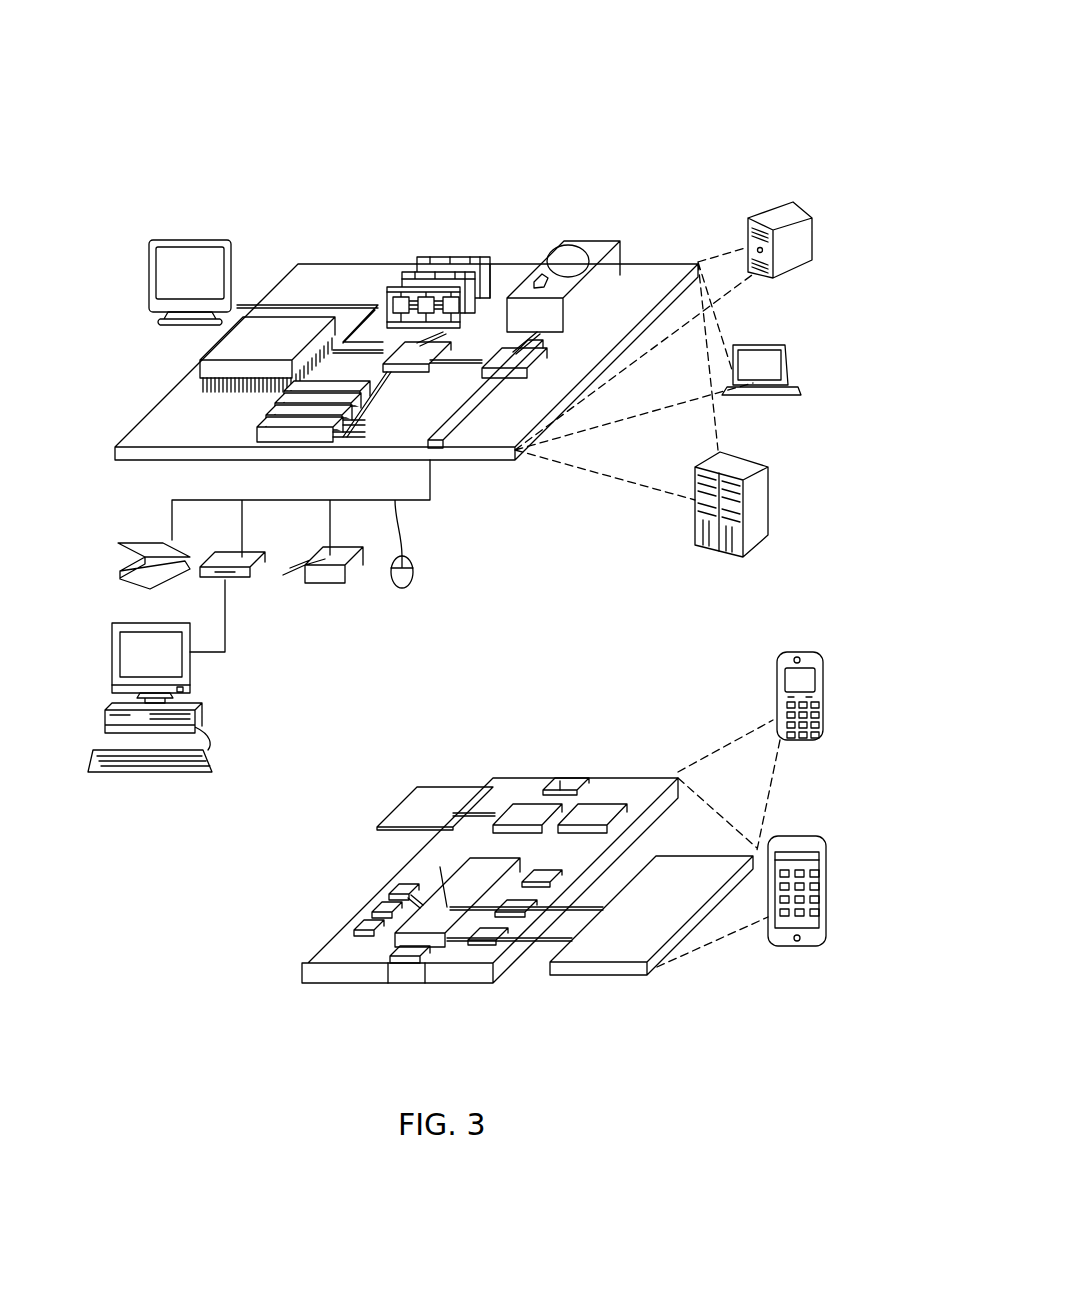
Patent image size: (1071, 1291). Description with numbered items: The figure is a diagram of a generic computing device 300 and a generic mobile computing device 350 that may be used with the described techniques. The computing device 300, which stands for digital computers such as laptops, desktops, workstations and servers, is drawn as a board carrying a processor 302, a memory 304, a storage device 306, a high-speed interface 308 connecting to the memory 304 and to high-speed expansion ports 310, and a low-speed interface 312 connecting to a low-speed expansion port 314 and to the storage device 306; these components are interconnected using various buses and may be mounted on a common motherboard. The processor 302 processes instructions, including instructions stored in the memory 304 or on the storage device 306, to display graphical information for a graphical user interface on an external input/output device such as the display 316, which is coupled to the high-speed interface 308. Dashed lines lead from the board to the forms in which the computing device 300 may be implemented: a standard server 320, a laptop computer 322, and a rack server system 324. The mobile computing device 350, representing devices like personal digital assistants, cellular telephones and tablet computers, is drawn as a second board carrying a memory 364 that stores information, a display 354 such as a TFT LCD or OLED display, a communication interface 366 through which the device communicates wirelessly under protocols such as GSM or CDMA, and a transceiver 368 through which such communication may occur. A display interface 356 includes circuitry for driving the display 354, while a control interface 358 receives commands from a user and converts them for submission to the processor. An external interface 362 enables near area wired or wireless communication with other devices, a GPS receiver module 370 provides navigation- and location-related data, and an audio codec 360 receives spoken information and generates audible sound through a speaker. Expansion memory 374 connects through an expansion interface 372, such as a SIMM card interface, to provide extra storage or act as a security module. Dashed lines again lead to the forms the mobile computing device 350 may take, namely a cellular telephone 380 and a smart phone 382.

The generic computing device 300 is at (176, 104).
The processor 302 is at (230, 357).
The memory 304 is at (447, 258).
The storage device 306 is at (586, 243).
The high-speed interface 308 is at (418, 352).
The high-speed expansion ports 310 is at (258, 431).
The low-speed interface 312 is at (518, 362).
The low-speed expansion port 314 is at (448, 448).
The display 316 is at (172, 262).
The standard server 320 is at (780, 210).
The laptop computer 322 is at (775, 355).
The rack server system 324 is at (760, 525).
The generic mobile computing device 350 is at (248, 989).
The display 354 is at (668, 922).
The display interface 356 is at (484, 942).
The control interface 358 is at (512, 915).
The audio codec 360 is at (541, 878).
The external interface 362 is at (408, 972).
The memory 364 is at (373, 910).
The communication interface 366 is at (522, 812).
The transceiver 368 is at (602, 812).
The GPS receiver module 370 is at (580, 777).
The expansion interface 372 is at (485, 768).
The expansion memory 374 is at (427, 795).
The cellular telephone 380 is at (813, 680).
The smart phone 382 is at (807, 905).